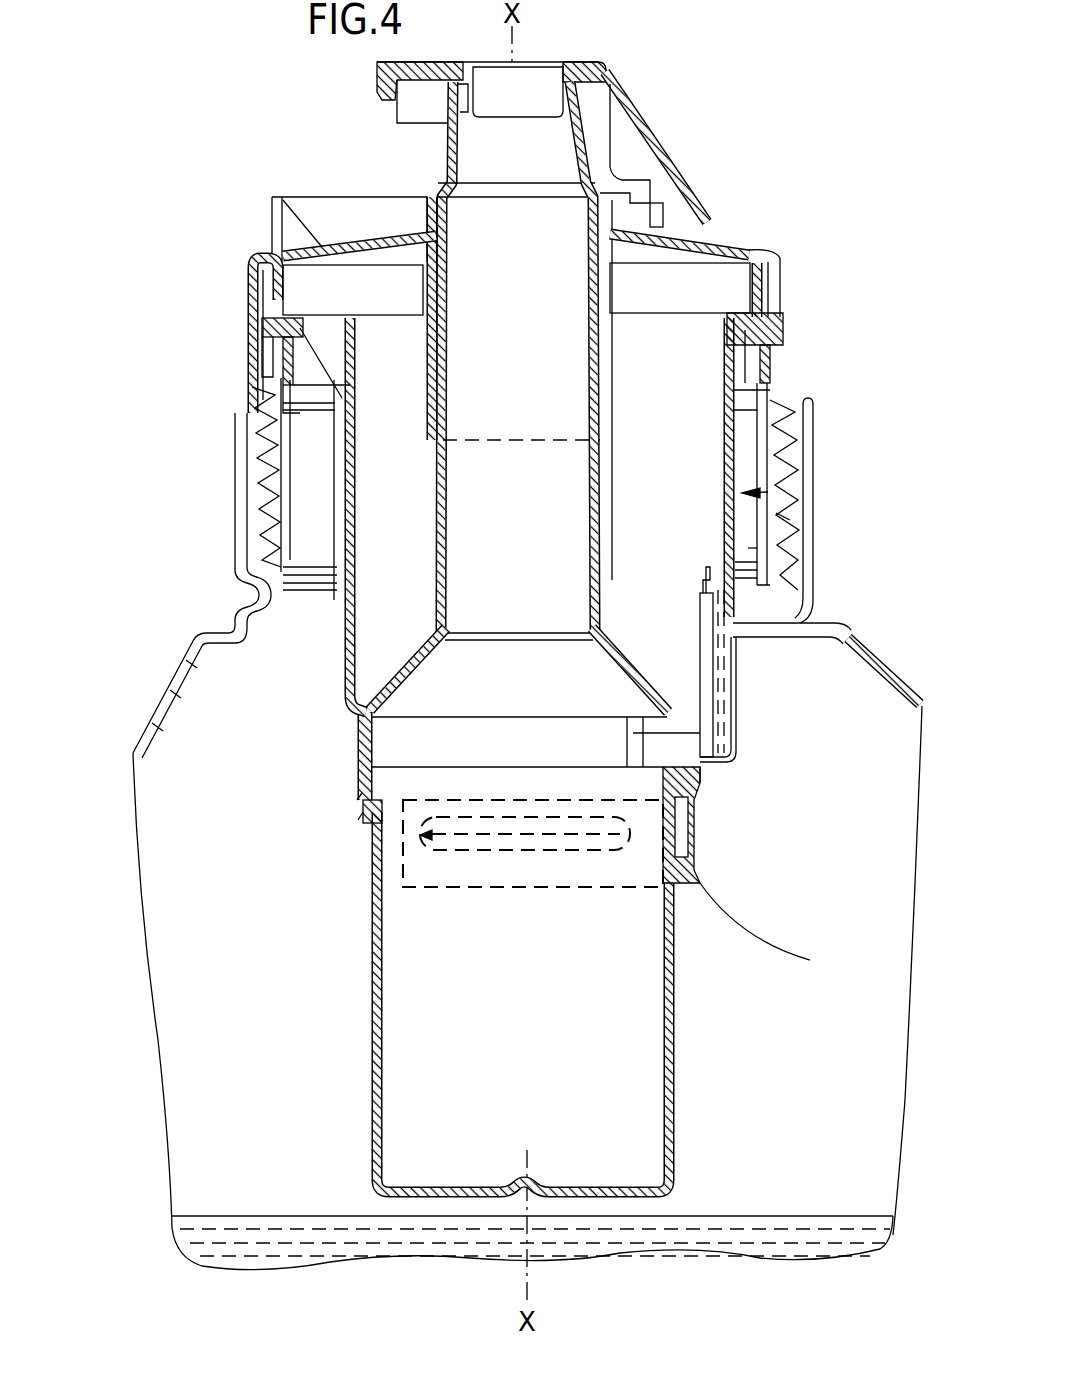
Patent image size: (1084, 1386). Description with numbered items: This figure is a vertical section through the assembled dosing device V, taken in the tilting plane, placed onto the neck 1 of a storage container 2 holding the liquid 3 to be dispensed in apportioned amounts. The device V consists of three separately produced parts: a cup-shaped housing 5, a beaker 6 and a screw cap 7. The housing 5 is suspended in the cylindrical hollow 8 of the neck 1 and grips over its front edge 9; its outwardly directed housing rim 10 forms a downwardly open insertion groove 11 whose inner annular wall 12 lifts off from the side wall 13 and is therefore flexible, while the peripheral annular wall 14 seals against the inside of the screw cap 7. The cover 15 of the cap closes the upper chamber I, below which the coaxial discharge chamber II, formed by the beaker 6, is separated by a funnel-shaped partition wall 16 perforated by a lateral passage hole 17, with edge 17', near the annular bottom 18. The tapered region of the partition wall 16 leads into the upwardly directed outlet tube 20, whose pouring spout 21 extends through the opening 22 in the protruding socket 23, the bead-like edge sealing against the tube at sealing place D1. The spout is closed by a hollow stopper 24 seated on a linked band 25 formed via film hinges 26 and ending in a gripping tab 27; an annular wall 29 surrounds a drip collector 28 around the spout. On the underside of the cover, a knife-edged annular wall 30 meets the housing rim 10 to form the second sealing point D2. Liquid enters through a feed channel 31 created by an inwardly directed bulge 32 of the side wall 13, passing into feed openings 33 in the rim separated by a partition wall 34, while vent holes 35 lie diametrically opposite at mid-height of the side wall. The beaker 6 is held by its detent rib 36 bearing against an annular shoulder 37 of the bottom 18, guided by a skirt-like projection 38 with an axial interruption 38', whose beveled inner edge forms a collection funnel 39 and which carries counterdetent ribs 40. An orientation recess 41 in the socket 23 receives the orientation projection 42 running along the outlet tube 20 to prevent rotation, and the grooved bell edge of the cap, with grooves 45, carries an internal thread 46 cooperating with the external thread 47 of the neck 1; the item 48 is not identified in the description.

The neck 1 is at (762, 452).
The storage container 2 is at (872, 658).
The liquid 3 is at (800, 1228).
The cup-shaped housing 5 is at (775, 487).
The beaker 6 is at (695, 991).
The screw cap 7 is at (781, 236).
The cylindrical hollow 8 is at (750, 545).
The front edge 9 is at (778, 343).
The housing rim 10 is at (782, 290).
The insertion groove 11 is at (788, 304).
The inner annular wall 12 is at (725, 355).
The side wall 13 is at (760, 395).
The peripheral annular wall 14 is at (762, 352).
The cover 15 is at (283, 200).
The partition wall 16 is at (398, 680).
The passage hole 17 is at (788, 766).
The edge of the passage hole 17' is at (795, 751).
The annular bottom 18 is at (698, 790).
The outlet tube 20 is at (437, 545).
The pouring spout 21 is at (582, 138).
The opening 22 is at (400, 208).
The socket 23 is at (422, 298).
The stopper 24 is at (563, 82).
The linked band 25 is at (643, 117).
The film-hinge 26 is at (607, 68).
The gripping tab 27 is at (380, 73).
The drip collector 28 is at (350, 212).
The annular wall 29 is at (263, 223).
The annular wall 30 is at (768, 250).
The feed channel 31 is at (316, 496).
The bulge 32 is at (350, 612).
The feed openings 33 is at (292, 350).
The partition wall 34 is at (320, 326).
The vent holes 35 is at (705, 574).
The detent rib 36 is at (362, 812).
The annular shoulder 37 is at (362, 793).
The skirt-like projection 38 is at (824, 845).
The axial interruption 38' is at (367, 918).
The collection funnel 39 is at (810, 960).
The counterdetent ribs 40 is at (380, 846).
The orientation recess 41 is at (600, 258).
The orientation projection 42 is at (600, 325).
The grooves 45 is at (782, 436).
The internal thread 46 is at (790, 510).
The external thread 47 is at (790, 465).
The block 48 is at (677, 187).
The sealing place D1 is at (430, 200).
The second sealing point D2 is at (776, 296).
The device V is at (226, 266).
The upper chamber I is at (388, 432).
The discharge chamber II is at (420, 1018).